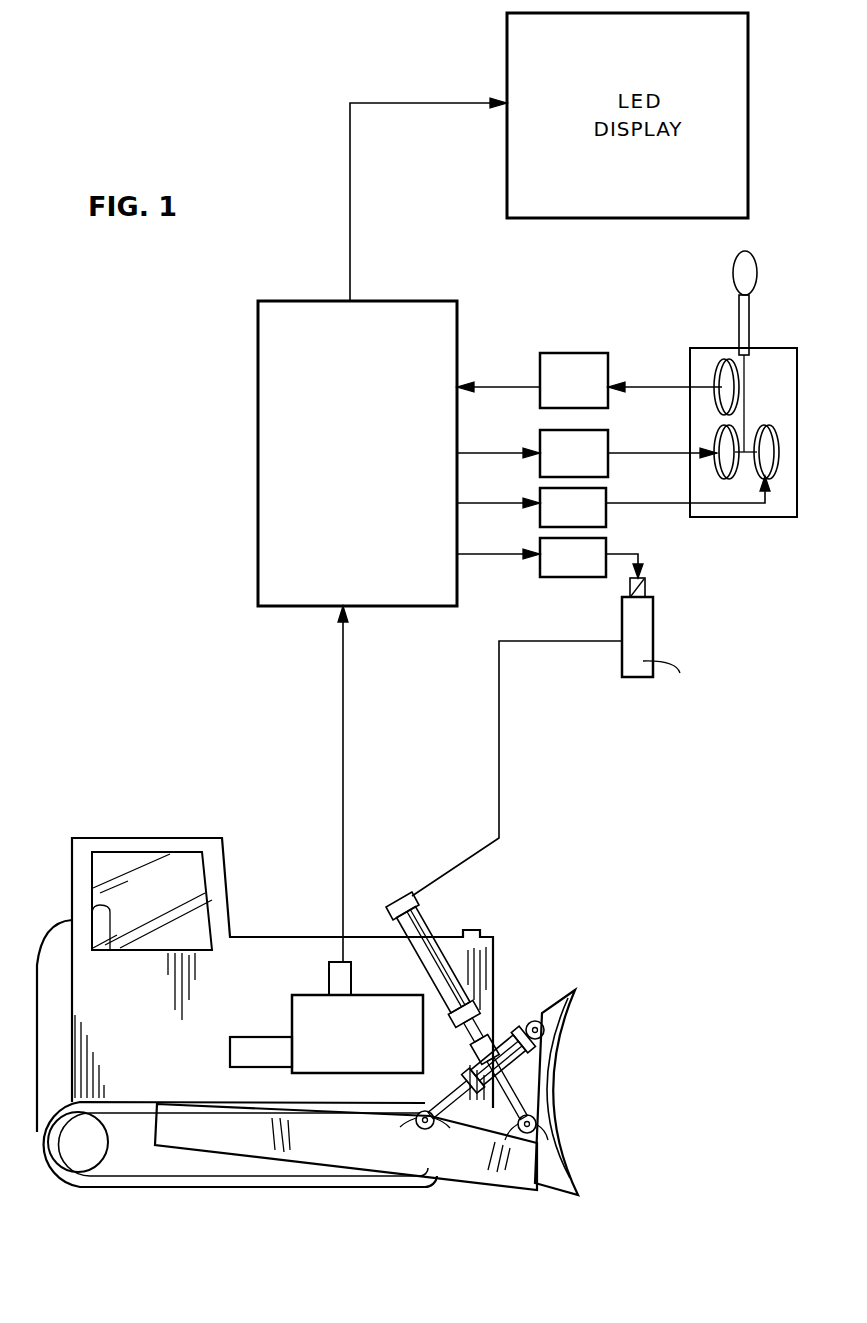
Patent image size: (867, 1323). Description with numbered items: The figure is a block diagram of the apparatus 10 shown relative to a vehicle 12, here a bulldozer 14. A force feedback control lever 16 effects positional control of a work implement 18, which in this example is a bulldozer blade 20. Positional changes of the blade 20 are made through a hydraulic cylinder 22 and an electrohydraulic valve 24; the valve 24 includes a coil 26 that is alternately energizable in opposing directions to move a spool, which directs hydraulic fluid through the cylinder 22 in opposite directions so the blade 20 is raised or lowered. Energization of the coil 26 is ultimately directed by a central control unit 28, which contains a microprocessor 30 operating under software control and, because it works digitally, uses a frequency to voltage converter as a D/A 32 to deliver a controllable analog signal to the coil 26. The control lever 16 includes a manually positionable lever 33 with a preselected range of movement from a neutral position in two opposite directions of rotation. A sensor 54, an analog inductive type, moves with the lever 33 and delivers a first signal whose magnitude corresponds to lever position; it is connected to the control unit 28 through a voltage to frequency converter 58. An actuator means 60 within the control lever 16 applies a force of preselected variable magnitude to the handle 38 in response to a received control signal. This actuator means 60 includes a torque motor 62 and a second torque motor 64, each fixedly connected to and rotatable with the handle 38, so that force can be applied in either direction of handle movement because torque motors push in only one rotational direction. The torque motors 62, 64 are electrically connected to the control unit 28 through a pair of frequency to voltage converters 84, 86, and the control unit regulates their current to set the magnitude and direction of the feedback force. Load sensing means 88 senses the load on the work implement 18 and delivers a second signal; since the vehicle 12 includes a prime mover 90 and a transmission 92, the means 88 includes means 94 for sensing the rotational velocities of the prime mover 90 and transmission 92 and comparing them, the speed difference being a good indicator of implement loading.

The apparatus 10 is at (297, 231).
The vehicle 12 is at (621, 978).
The bulldozer 14 is at (50, 962).
The force feedback control lever 16 is at (672, 726).
The work implement 18 is at (590, 1183).
The bulldozer blade 20 is at (558, 1045).
The hydraulic cylinder 22 is at (428, 925).
The electrohydraulic valve 24 is at (653, 630).
The coil 26 is at (648, 590).
The central control unit 28 is at (230, 527).
The microprocessor 30 is at (357, 453).
The D/A 32 is at (589, 578).
The manually positionable lever 33 is at (712, 287).
The handle 38 is at (739, 310).
The sensor 54 is at (721, 375).
The voltage to frequency converter 58 is at (556, 353).
The actuator means 60 is at (773, 385).
The torque motor 62 is at (718, 467).
The second torque motor 64 is at (775, 473).
The frequency to voltage converter 84 is at (608, 440).
The frequency to voltage converter 86 is at (606, 493).
The load sensing means 88 is at (318, 924).
The prime mover 90 is at (357, 1034).
The transmission 92 is at (257, 1045).
The velocity sensing means 94 is at (329, 975).